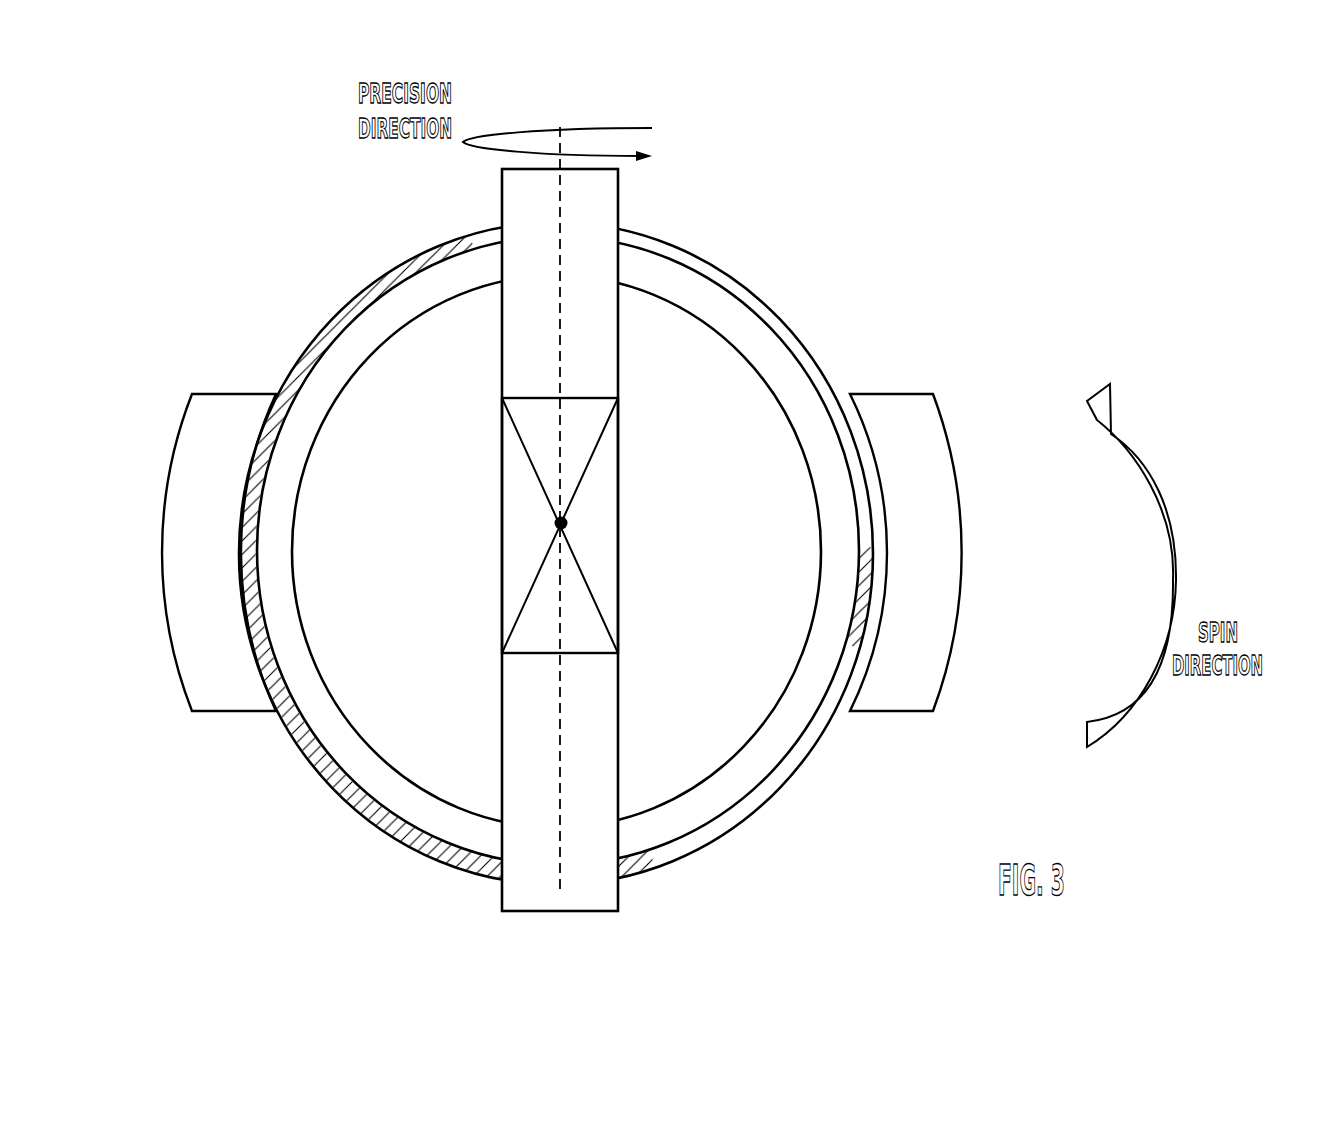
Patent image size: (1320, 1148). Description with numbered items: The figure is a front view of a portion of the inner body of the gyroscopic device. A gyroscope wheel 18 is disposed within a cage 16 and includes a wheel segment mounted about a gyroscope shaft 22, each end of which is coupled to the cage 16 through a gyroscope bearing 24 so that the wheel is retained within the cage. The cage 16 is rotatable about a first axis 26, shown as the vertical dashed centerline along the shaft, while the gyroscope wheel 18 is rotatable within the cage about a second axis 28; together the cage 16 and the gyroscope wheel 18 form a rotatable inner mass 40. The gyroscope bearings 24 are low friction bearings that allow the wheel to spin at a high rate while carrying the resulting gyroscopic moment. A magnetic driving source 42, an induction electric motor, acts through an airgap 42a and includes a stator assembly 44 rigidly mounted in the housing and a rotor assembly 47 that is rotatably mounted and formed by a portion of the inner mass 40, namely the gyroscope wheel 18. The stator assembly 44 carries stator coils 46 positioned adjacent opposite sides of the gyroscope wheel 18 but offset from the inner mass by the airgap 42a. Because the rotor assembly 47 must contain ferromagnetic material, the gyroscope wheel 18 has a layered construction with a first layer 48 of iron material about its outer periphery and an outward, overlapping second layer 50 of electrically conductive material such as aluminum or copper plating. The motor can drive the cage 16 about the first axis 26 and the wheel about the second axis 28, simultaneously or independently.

The cage 16 is at (603, 323).
The gyroscope wheel 18 is at (723, 775).
The gyroscope shaft 22 is at (502, 315).
The gyroscope bearing 24 is at (515, 488).
The first axis 26 is at (560, 258).
The second axis 28 is at (563, 523).
The rotatable inner mass 40 is at (634, 220).
The magnetic driving source 42 is at (1000, 583).
The airgap 42a is at (880, 533).
The stator assembly 44 is at (960, 668).
The stator coil 46 is at (218, 432).
The rotor assembly 47 is at (834, 305).
The first layer 48 is at (782, 382).
The second layer 50 is at (823, 387).